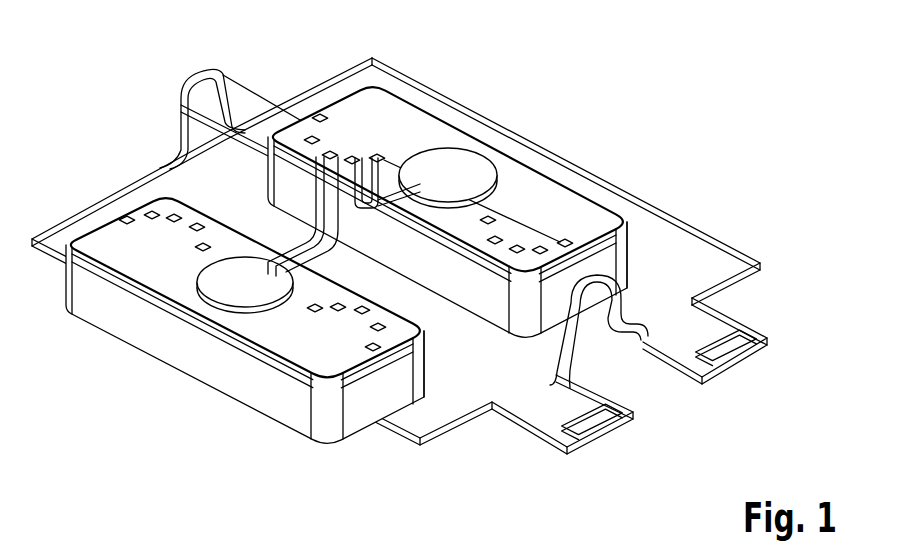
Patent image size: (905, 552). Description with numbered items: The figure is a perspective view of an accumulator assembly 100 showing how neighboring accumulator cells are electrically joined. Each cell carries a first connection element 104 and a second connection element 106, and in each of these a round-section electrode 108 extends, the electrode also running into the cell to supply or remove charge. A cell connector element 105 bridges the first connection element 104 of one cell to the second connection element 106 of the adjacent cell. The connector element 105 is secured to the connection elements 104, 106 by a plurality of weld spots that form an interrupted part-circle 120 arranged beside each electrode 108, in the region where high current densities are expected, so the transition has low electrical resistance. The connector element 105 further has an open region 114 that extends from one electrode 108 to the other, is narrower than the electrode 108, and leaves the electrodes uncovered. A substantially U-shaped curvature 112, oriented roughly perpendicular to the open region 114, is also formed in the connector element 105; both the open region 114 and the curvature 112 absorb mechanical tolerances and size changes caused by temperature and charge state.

The electronic assembly 100 is at (612, 48).
The first connection element 104 is at (518, 193).
The cell connector element 105 is at (705, 328).
The second connection element 106 is at (117, 318).
The electrode 108 is at (457, 172).
The substantially U-shaped curvature 112 is at (208, 92).
The open region 114 is at (368, 138).
The interrupted part-circle 120 is at (313, 108).